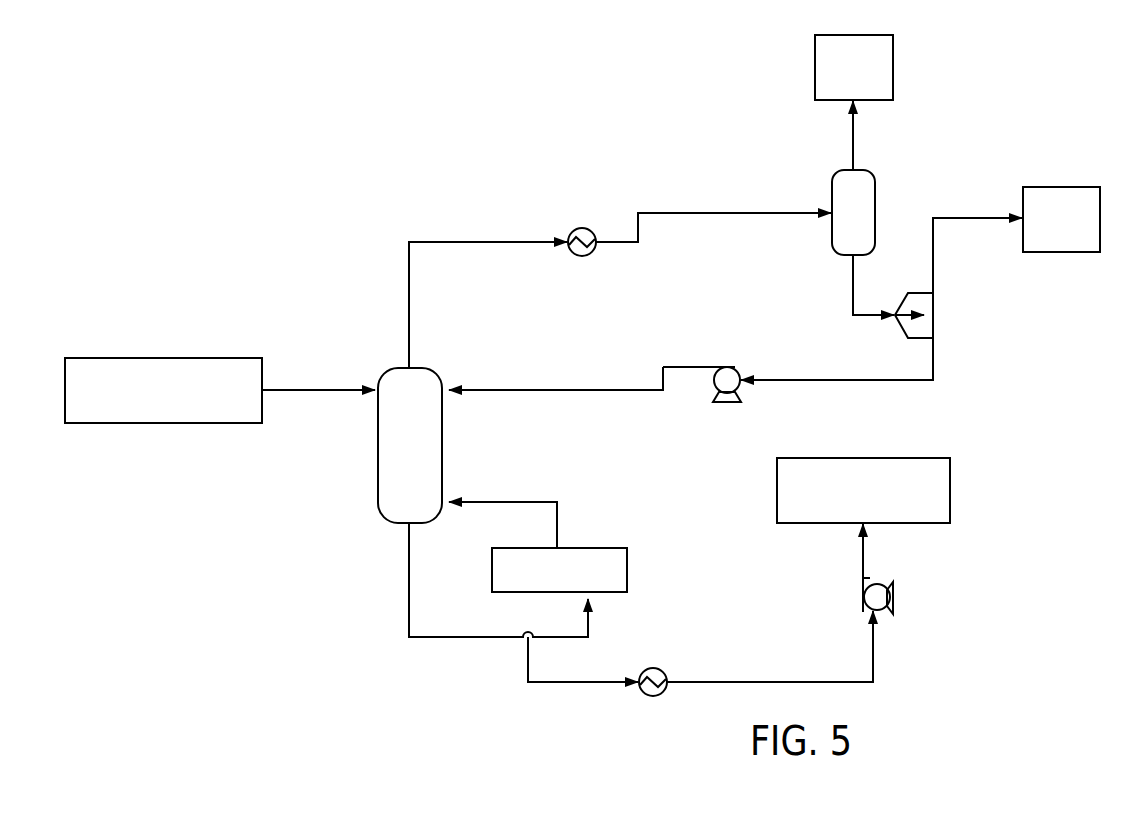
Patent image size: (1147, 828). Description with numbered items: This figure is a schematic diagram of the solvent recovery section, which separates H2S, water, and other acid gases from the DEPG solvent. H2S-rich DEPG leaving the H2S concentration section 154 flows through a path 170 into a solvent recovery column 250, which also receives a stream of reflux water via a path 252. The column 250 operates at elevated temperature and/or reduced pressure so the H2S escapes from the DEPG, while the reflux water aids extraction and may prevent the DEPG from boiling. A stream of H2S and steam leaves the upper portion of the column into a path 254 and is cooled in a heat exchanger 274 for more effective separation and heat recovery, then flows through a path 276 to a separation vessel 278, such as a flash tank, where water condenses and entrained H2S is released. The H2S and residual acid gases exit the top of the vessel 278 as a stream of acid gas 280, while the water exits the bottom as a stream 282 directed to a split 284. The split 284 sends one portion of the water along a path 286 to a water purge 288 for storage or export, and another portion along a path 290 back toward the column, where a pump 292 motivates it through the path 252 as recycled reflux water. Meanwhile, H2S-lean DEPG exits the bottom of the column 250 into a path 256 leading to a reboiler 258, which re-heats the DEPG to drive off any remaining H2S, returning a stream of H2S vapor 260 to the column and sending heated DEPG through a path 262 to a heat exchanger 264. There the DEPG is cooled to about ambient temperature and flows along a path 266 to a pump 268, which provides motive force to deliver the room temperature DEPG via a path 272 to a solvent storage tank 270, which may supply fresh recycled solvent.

The H2S concentration section 154 is at (213, 358).
The path 170 is at (291, 390).
The solvent recovery column 250 is at (426, 368).
The path 252 is at (550, 390).
The path 254 is at (435, 242).
The path 256 is at (430, 637).
The reboiler 258 is at (610, 548).
The stream of H2S vapor 260 is at (528, 502).
The path 262 is at (545, 682).
The heat exchanger 264 is at (660, 668).
The path 266 is at (767, 682).
The pump 268 is at (876, 584).
The solvent storage tank 270 is at (922, 458).
The path 272 is at (863, 565).
The heat exchanger 274 is at (586, 256).
The path 276 is at (701, 213).
The separation vessel 278 is at (869, 170).
The stream of acid gas 280 is at (881, 35).
The stream 282 is at (853, 284).
The split 284 is at (903, 337).
The path 286 is at (933, 255).
The water purge 288 is at (1093, 187).
The path 290 is at (890, 381).
The pump 292 is at (722, 367).